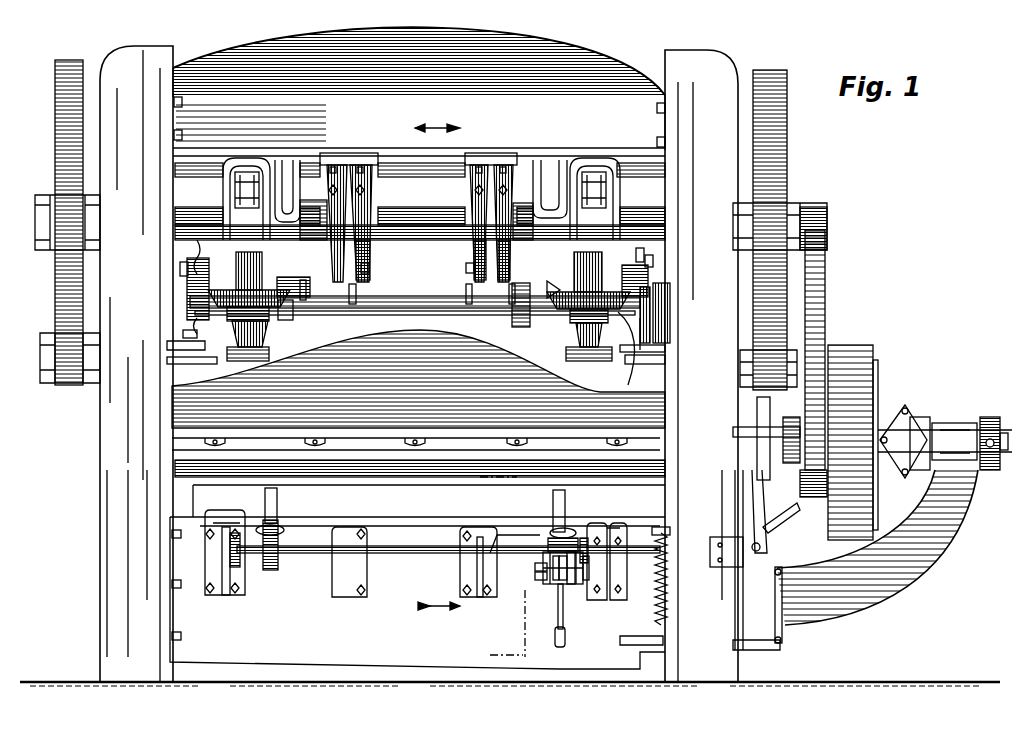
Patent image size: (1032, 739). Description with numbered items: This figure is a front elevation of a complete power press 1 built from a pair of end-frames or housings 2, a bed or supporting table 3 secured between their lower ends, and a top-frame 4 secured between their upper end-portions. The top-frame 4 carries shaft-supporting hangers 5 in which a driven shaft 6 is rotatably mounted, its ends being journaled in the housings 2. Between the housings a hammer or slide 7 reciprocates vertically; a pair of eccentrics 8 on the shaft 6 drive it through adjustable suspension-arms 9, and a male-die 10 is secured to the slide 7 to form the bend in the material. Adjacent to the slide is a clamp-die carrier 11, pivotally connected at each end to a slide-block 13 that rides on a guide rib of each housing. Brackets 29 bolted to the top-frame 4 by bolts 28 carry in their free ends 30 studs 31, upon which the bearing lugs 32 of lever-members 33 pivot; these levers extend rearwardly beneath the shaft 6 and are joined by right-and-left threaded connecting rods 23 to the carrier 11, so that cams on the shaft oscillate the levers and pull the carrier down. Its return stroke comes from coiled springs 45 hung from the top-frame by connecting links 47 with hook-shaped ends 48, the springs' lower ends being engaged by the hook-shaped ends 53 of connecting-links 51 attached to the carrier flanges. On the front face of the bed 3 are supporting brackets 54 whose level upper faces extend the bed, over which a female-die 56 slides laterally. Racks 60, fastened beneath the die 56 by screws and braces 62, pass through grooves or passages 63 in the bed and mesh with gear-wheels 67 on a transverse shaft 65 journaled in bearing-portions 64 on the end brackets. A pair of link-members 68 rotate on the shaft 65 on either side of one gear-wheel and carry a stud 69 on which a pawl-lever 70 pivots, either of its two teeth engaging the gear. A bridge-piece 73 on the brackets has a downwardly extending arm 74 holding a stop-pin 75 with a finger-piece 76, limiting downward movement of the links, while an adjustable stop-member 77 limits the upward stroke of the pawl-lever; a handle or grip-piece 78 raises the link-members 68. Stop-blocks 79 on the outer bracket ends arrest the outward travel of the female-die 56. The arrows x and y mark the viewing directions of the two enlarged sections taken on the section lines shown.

The power press 1 is at (523, 355).
The end-frames or housings 2 is at (153, 50).
The bed or supporting table 3 is at (417, 593).
The top-frame 4 is at (436, 48).
The shaft-supporting hangers 5 is at (415, 248).
The driven shaft 6 is at (469, 460).
The hammer or slide 7 is at (418, 403).
The eccentrics 8 is at (240, 207).
The adjustable suspension-arms 9 is at (240, 270).
The male-die 10 is at (397, 470).
The clamp-die carrier 11 is at (180, 362).
The slide-block 13 is at (180, 345).
The connecting rods 23 is at (305, 322).
The bolts 28 is at (513, 180).
The brackets 29 is at (478, 207).
The free ends 30 is at (353, 300).
The studs 31 is at (368, 270).
The bearing lugs 32 is at (325, 296).
The lever-members 33 is at (365, 250).
The coiled springs 45 is at (187, 276).
The connecting links 47 is at (200, 247).
The hook-shaped ends 48 is at (195, 267).
The connecting-links 51 is at (187, 333).
The hook-shaped ends 53 is at (195, 320).
The supporting brackets 54 is at (227, 530).
The female-die 56 is at (430, 507).
The racks 60 is at (273, 523).
The braces 62 is at (273, 502).
The grooves or passages 63 is at (283, 532).
The bearing-portions 64 is at (245, 563).
The shaft 65 is at (413, 556).
The gear-wheels 67 is at (277, 570).
The link-members 68 is at (550, 581).
The stud 69 is at (530, 583).
The pawl-lever 70 is at (553, 617).
The bridge-piece 73 is at (510, 537).
The downwardly extending arm 74 is at (567, 617).
The stop-pin 75 is at (570, 587).
The finger-piece 76 is at (590, 581).
The stop-member 77 is at (537, 570).
The handle or grip-piece 78 is at (547, 573).
The stop-blocks 79 is at (233, 518).
The arrow x is at (451, 134).
The arrow y is at (439, 620).